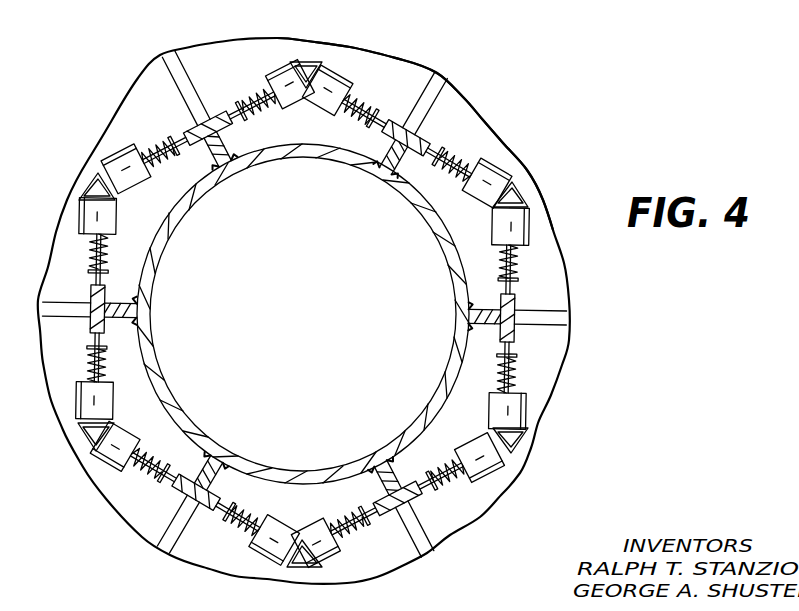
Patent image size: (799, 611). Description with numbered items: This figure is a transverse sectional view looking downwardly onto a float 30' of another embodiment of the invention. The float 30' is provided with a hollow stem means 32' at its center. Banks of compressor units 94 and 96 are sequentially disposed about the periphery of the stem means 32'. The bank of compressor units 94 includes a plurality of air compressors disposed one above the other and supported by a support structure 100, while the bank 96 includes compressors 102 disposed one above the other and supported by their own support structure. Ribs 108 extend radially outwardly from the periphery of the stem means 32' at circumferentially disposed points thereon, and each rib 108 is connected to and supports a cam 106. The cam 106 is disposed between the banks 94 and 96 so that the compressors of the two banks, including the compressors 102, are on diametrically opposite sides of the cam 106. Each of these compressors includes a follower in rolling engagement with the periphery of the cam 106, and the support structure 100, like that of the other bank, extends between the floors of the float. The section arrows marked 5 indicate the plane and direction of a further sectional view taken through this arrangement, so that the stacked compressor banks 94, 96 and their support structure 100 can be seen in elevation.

The section line 5- 5 is at (338, 129).
The float 30' is at (304, 311).
The hollow stem means 32' is at (303, 314).
The bank of compressor units 94 is at (407, 32).
The bank of compressor units 96 is at (512, 128).
The support structure 100 is at (306, 62).
The compressor 102 is at (515, 188).
The cam 106 is at (406, 127).
The rib 108 is at (385, 163).